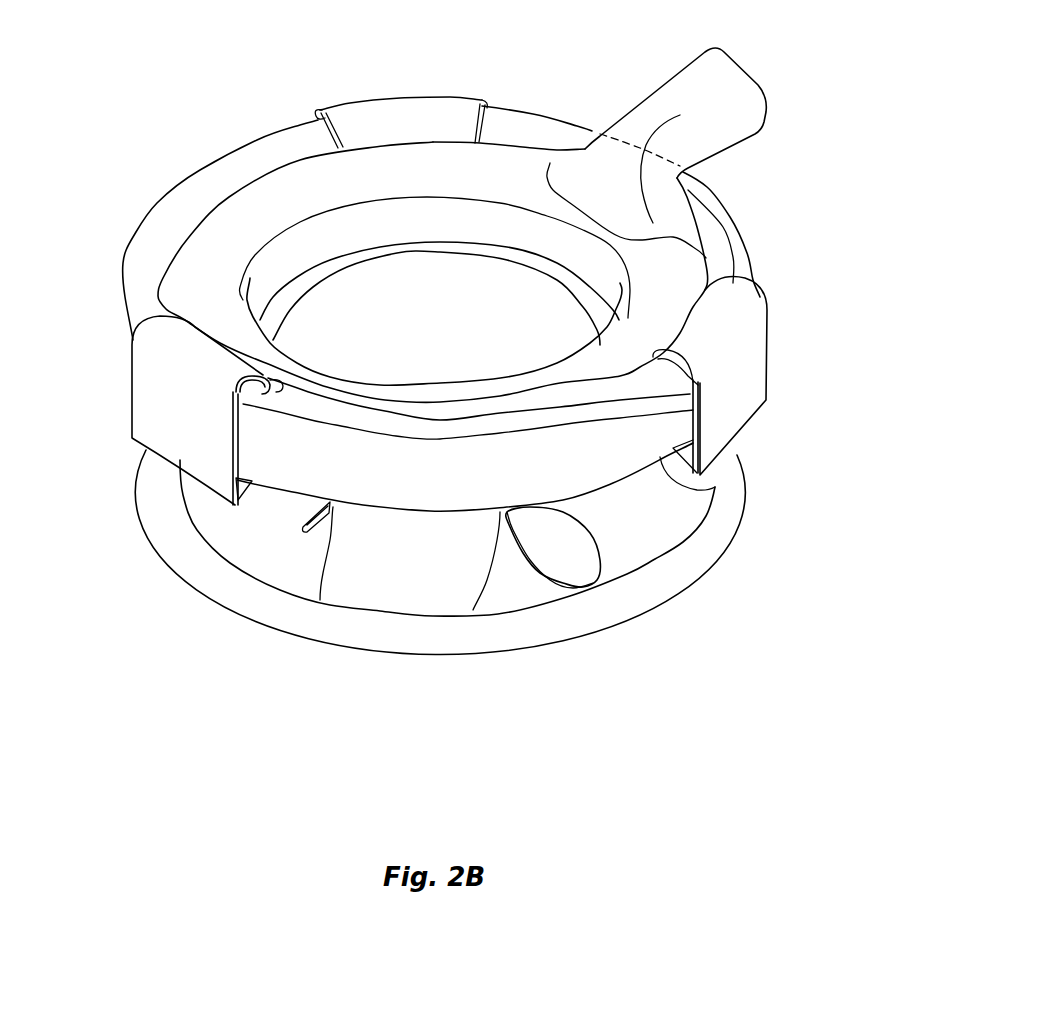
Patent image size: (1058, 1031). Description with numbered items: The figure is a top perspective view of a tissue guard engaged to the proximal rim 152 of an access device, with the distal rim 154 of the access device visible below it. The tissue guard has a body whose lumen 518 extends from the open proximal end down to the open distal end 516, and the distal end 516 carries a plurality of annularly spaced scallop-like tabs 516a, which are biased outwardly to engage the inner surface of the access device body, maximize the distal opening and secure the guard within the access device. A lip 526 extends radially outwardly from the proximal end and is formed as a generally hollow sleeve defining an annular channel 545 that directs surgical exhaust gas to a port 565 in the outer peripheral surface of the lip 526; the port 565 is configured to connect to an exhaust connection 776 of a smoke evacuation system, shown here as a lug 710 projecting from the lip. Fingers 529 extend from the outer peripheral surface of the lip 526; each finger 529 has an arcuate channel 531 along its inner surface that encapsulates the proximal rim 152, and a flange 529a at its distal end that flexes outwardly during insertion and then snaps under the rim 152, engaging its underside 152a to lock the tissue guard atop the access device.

The proximal rim 152 is at (740, 248).
The ring tab 152a is at (733, 473).
The distal rim 154 is at (737, 533).
The open distal end 516 is at (393, 597).
The scallop-like tabs 516a is at (308, 535).
The lumen 518 is at (393, 289).
The lip 526 is at (500, 165).
The fingers 529 is at (153, 352).
The flange 529a is at (237, 508).
The arcuate channel 531 is at (256, 394).
The annular channel 545 is at (272, 197).
The port 565 is at (667, 204).
The lug 710 is at (742, 108).
The exhaust connection 776 is at (596, 151).